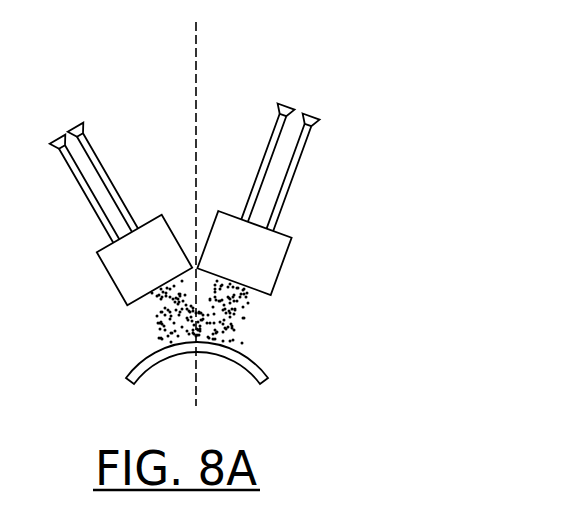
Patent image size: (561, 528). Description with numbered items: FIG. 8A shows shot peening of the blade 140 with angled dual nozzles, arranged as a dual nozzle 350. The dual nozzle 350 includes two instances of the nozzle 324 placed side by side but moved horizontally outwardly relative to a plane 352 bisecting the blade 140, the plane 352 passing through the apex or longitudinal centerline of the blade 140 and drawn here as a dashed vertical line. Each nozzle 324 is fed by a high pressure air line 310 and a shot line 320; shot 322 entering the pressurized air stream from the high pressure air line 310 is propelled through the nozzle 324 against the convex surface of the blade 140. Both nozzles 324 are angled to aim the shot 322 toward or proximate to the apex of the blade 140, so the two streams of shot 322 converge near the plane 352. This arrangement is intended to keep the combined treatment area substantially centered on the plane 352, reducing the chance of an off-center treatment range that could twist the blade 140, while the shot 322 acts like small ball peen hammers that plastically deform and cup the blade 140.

The blade 140 is at (262, 367).
The high pressure air line 310 is at (82, 187).
The shot line 320 is at (88, 139).
The shot 322 is at (118, 340).
The nozzle 324 is at (110, 275).
The dual nozzle 350 is at (305, 240).
The plane bisecting the blade 352 is at (196, 34).